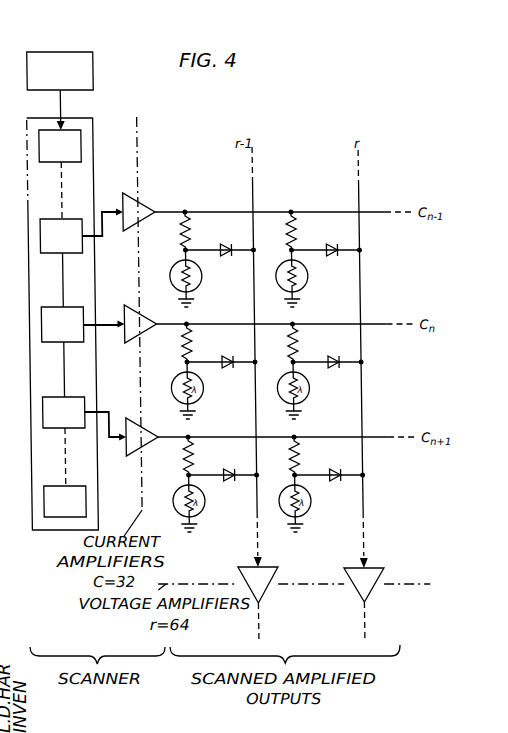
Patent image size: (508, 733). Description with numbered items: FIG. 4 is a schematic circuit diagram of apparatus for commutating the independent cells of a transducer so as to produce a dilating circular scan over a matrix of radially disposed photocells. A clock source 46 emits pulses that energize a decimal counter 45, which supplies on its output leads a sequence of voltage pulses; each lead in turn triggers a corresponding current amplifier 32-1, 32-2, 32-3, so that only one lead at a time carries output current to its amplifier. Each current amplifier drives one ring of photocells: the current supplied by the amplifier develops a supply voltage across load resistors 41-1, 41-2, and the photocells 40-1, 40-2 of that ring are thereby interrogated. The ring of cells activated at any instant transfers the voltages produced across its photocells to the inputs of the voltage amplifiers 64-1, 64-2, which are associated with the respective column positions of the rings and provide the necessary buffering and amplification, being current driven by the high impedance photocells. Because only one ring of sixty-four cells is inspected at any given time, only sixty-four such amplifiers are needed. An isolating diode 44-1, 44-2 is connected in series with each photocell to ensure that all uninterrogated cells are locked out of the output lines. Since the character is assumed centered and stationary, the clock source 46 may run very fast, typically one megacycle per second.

The clock source 46 is at (92, 76).
The decimal counter 45 is at (84, 118).
The current amplifier 32-1 is at (126, 202).
The current amplifier 32-2 is at (126, 314).
The current amplifier 32-3 is at (126, 427).
The load resistor 41-1 is at (177, 240).
The load resistor 41-2 is at (284, 241).
The isolating diode 44-1 is at (226, 239).
The isolating diode 44-2 is at (331, 239).
The photocell 40-1 is at (195, 272).
The photocell 40-2 is at (302, 272).
The amplifier 64-1 is at (240, 566).
The amplifier 64-2 is at (345, 566).